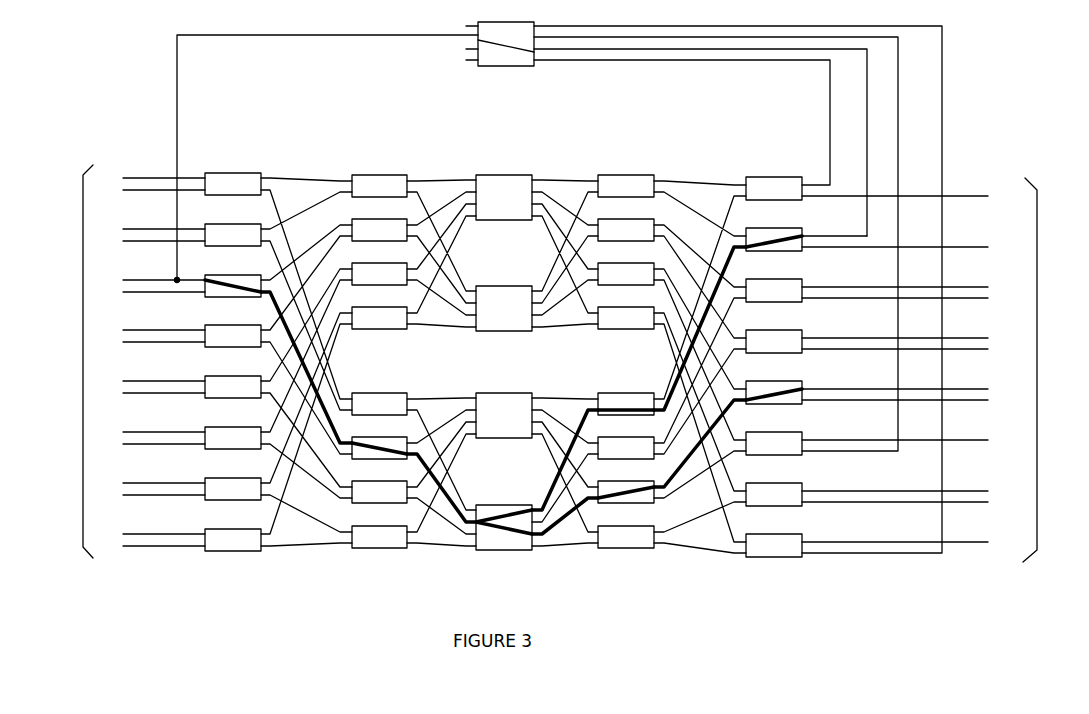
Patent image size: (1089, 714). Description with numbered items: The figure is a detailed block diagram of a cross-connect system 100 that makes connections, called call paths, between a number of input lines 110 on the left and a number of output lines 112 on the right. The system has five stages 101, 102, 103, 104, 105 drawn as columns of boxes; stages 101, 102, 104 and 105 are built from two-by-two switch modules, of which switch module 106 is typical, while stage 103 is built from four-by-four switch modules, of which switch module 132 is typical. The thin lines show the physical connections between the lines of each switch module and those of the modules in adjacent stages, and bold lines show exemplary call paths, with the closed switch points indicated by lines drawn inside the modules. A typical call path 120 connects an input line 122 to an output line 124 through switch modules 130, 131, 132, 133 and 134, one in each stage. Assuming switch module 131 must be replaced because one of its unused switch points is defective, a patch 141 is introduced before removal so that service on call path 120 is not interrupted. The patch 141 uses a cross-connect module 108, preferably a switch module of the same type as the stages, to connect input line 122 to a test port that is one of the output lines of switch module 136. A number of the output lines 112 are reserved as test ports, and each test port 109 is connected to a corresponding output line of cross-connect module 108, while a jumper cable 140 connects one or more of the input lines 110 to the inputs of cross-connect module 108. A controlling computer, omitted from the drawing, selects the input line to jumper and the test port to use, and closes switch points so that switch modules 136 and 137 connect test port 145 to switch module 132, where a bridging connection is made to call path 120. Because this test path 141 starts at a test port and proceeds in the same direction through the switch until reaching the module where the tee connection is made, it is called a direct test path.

The cross-connect system 100 is at (207, 600).
The first stage 101 is at (231, 160).
The second stage 102 is at (381, 160).
The third stage 103 is at (502, 162).
The fourth stage 104 is at (627, 160).
The fifth stage 105 is at (773, 162).
The switch module 106 is at (240, 543).
The cross-connect module 108 is at (520, 58).
The test port 109 is at (950, 96).
The input lines 110 is at (83, 360).
The output lines 112 is at (1037, 375).
The call path 120 is at (266, 313).
The input line 122 is at (119, 275).
The output line 124 is at (1008, 375).
The switch module 130 is at (245, 278).
The switch module 131 is at (395, 442).
The switch module 132 is at (513, 508).
The switch module 133 is at (643, 488).
The switch module 134 is at (790, 386).
The switch module 136 is at (790, 233).
The switch module 137 is at (645, 397).
The jumper cable 140 is at (306, 45).
The patch 141 is at (745, 268).
The test port 145 is at (837, 230).